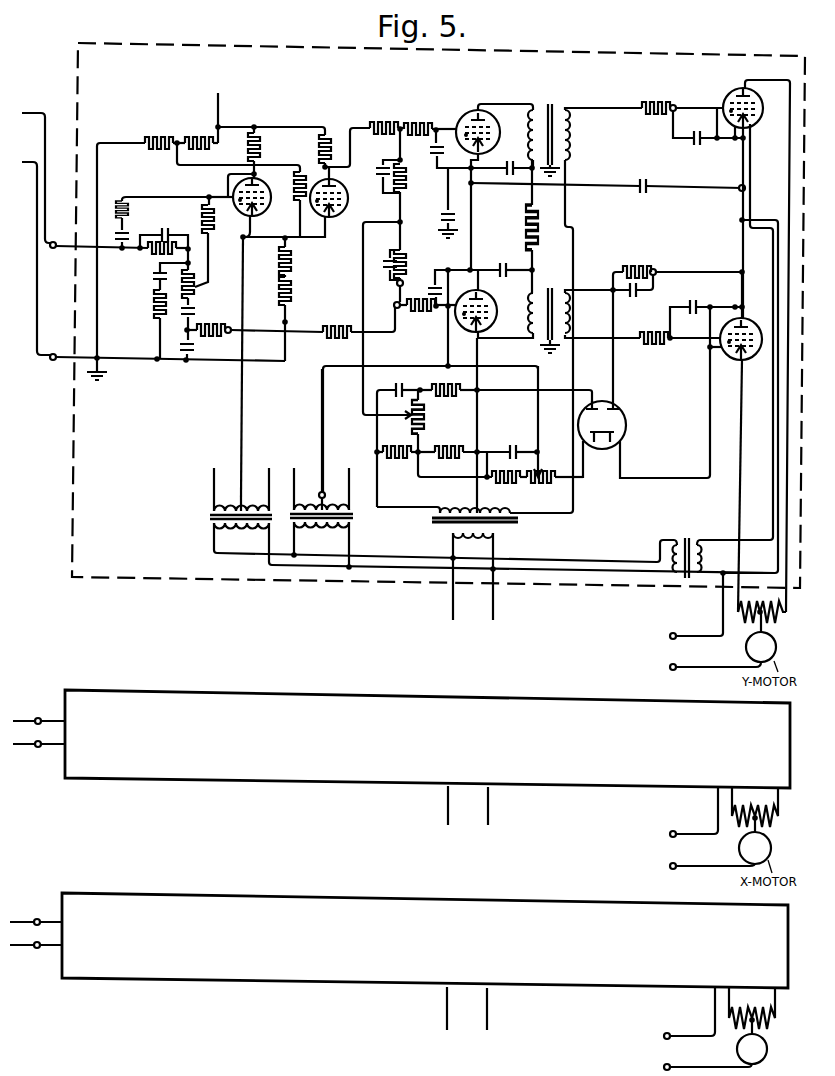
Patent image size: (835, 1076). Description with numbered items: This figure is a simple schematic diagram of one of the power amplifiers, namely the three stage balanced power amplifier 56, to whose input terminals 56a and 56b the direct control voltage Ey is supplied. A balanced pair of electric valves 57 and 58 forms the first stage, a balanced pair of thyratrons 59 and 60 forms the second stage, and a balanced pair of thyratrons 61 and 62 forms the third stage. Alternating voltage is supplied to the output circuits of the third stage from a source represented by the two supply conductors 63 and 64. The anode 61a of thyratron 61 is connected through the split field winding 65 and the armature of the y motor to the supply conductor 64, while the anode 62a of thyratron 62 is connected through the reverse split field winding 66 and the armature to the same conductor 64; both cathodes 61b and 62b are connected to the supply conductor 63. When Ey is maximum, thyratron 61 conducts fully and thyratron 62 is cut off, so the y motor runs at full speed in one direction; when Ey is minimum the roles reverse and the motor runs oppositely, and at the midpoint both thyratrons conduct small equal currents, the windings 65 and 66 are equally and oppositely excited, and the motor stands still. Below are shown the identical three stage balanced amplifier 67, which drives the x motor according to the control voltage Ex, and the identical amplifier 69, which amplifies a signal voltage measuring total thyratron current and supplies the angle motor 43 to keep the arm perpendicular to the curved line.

The three stage balanced power amplifier 56 is at (78, 78).
The input terminal 56a is at (54, 243).
The input terminal 56b is at (52, 360).
The electric valve 57 is at (268, 207).
The electric valve 58 is at (350, 204).
The thyratron 59 is at (471, 113).
The thyratron 60 is at (472, 334).
The thyratron 61 is at (761, 97).
The anode of thyratron 61 61a is at (742, 89).
The cathode of thyratron 61 61b is at (762, 117).
The thyratron 62 is at (732, 360).
The anode of thyratron 62 62a is at (748, 360).
The cathode of thyratron 62 62b is at (754, 323).
The supply conductor 63 is at (694, 634).
The supply conductor 64 is at (697, 670).
The split field winding 65 is at (775, 628).
The reverse split field winding 66 is at (748, 626).
The three stage balanced amplifier 67 is at (306, 692).
The three stage balanced amplifier 69 is at (287, 893).
The angle motor 43 is at (767, 1047).